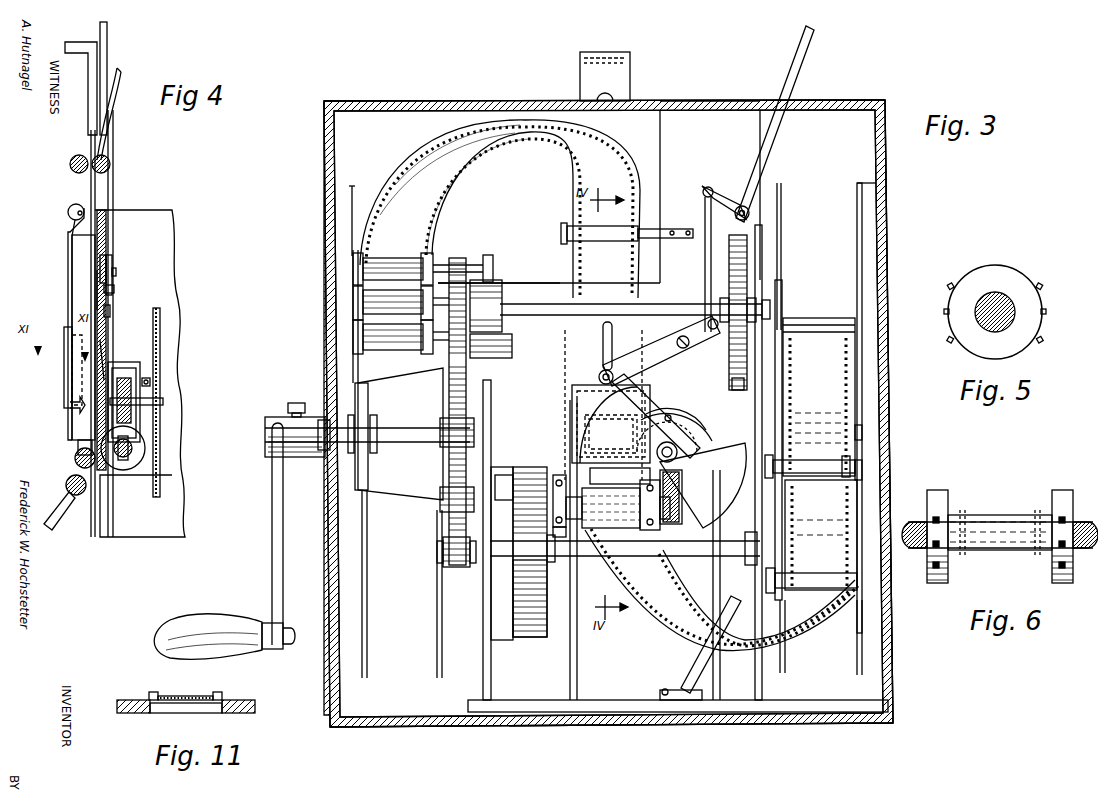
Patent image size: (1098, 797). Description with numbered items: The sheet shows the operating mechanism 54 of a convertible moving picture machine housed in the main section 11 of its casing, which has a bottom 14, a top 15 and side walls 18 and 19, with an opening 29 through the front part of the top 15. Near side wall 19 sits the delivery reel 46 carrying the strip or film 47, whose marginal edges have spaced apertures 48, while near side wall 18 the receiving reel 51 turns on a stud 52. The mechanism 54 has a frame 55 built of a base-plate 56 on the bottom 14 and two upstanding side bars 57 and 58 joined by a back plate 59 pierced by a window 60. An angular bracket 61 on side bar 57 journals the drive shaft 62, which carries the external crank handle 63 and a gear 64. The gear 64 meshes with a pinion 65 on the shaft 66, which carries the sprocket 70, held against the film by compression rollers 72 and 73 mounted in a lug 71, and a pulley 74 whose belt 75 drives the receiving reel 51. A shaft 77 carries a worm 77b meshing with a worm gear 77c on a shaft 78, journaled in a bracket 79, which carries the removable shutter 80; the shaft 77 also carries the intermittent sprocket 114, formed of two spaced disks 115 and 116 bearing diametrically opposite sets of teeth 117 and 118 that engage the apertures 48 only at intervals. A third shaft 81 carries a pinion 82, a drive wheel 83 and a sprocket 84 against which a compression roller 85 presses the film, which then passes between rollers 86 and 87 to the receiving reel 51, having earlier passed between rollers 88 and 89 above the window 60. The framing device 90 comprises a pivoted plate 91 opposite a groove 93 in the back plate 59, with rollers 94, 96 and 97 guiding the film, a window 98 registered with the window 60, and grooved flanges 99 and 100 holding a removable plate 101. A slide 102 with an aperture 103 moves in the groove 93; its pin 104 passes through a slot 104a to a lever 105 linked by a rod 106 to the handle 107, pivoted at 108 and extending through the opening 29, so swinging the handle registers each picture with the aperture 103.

In FIG. 3, the main section 11 is at (490, 100).
In FIG. 3, the bottom 14 is at (392, 725).
In FIG. 3, the top 15 is at (462, 100).
In FIG. 3, the side wall 18 is at (886, 215).
In FIG. 3, the side wall 19 is at (326, 250).
In FIG. 3, the opening 29 is at (735, 101).
In FIG. 3, the delivery reel 46 is at (349, 188).
In FIG. 3, the strip or film 47 is at (413, 168).
In FIG. 4, the strip or film 47 is at (112, 95).
In FIG. 3, the spaced apertures 48 is at (450, 160).
In FIG. 3, the receiving reel 51 is at (886, 170).
In FIG. 3, the stud 52 is at (862, 432).
In FIG. 3, the mechanism 54 is at (545, 632).
In FIG. 3, the frame 55 is at (660, 128).
In FIG. 3, the base-plate 56 is at (535, 712).
In FIG. 3, the side bar 57 is at (488, 672).
In FIG. 3, the side bar 58 is at (762, 680).
In FIG. 4, the side bar 58 is at (172, 222).
In FIG. 3, the back plate 59 is at (520, 282).
In FIG. 4, the back plate 59 is at (96, 78).
In FIG. 3, the window 60 is at (580, 385).
In FIG. 3, the bracket 61 is at (400, 482).
In FIG. 3, the drive shaft 62 is at (405, 436).
In FIG. 3, the crank handle 63 is at (272, 530).
In FIG. 3, the gear 64 is at (449, 395).
In FIG. 3, the pinion 65 is at (488, 258).
In FIG. 3, the shaft 66 is at (532, 312).
In FIG. 3, the sprocket 70 is at (396, 338).
In FIG. 3, the lug 71 is at (490, 350).
In FIG. 3, the compression roller 72 is at (400, 298).
In FIG. 3, the compression roller 73 is at (390, 262).
In FIG. 3, the pulley 74 is at (735, 246).
In FIG. 3, the belt 75 is at (733, 382).
In FIG. 3, the shaft 77 is at (503, 475).
In FIG. 4, the shaft 77 is at (132, 448).
In FIG. 3, the worm 77b is at (690, 500).
In FIG. 3, the worm gear 77c is at (705, 465).
In FIG. 4, the worm gear 77c is at (133, 395).
In FIG. 3, the shaft 78 is at (677, 455).
In FIG. 4, the shaft 78 is at (164, 402).
In FIG. 3, the bracket 79 is at (697, 428).
In FIG. 4, the bracket 79 is at (140, 368).
In FIG. 3, the shutter 80 is at (655, 405).
In FIG. 4, the shutter 80 is at (160, 320).
In FIG. 3, the shaft 81 is at (645, 556).
In FIG. 5, the shaft 81 is at (1003, 302).
In FIG. 6, the shaft 81 is at (915, 549).
In FIG. 3, the pinion 82 is at (452, 565).
In FIG. 3, the drive wheel 83 is at (542, 590).
In FIG. 3, the sprocket 84 is at (862, 510).
In FIG. 3, the compression roller 85 is at (820, 582).
In FIG. 3, the compression roller 86 is at (862, 468).
In FIG. 3, the compression roller 87 is at (860, 462).
In FIG. 3, the compression roller 88 is at (605, 241).
In FIG. 4, the compression roller 88 is at (110, 162).
In FIG. 4, the compression roller 89 is at (73, 160).
In FIG. 4, the framing device 90 is at (68, 238).
In FIG. 4, the plate 91 is at (72, 278).
In FIG. 4, the groove 93 is at (108, 205).
In FIG. 4, the roller 94 is at (75, 457).
In FIG. 4, the roller 96 is at (77, 496).
In FIG. 4, the roller 97 is at (70, 206).
In FIG. 4, the window 98 is at (70, 404).
In FIG. 11, the window 98 is at (200, 713).
In FIG. 4, the grooved flange 99 is at (64, 360).
In FIG. 11, the grooved flange 99 is at (149, 696).
In FIG. 11, the grooved flange 100 is at (222, 696).
In FIG. 11, the removable plate 101 is at (185, 690).
In FIG. 3, the slide 102 is at (574, 405).
In FIG. 4, the slide 102 is at (97, 288).
In FIG. 3, the aperture 103 is at (588, 426).
In FIG. 4, the aperture 103 is at (100, 368).
In FIG. 3, the pin 104 is at (600, 374).
In FIG. 4, the pin 104 is at (114, 290).
In FIG. 3, the slot 104a is at (603, 340).
In FIG. 4, the slot 104a is at (100, 262).
In FIG. 3, the lever 105 is at (665, 362).
In FIG. 4, the lever 105 is at (116, 282).
In FIG. 3, the rod 106 is at (706, 265).
In FIG. 4, the rod 106 is at (113, 225).
In FIG. 3, the handle 107 is at (775, 128).
In FIG. 4, the handle 107 is at (108, 32).
In FIG. 3, the pivot 108 is at (738, 205).
In FIG. 3, the sprocket 114 is at (612, 530).
In FIG. 6, the sprocket 114 is at (1000, 515).
In FIG. 3, the disk 115 is at (557, 476).
In FIG. 5, the disk 115 is at (1000, 268).
In FIG. 6, the disk 115 is at (937, 584).
In FIG. 3, the disk 116 is at (660, 500).
In FIG. 6, the disk 116 is at (1062, 584).
In FIG. 3, the teeth 117 is at (568, 535).
In FIG. 5, the teeth 117 is at (948, 288).
In FIG. 6, the teeth 117 is at (939, 543).
In FIG. 3, the teeth 118 is at (668, 530).
In FIG. 5, the teeth 118 is at (1042, 288).
In FIG. 6, the teeth 118 is at (1059, 522).